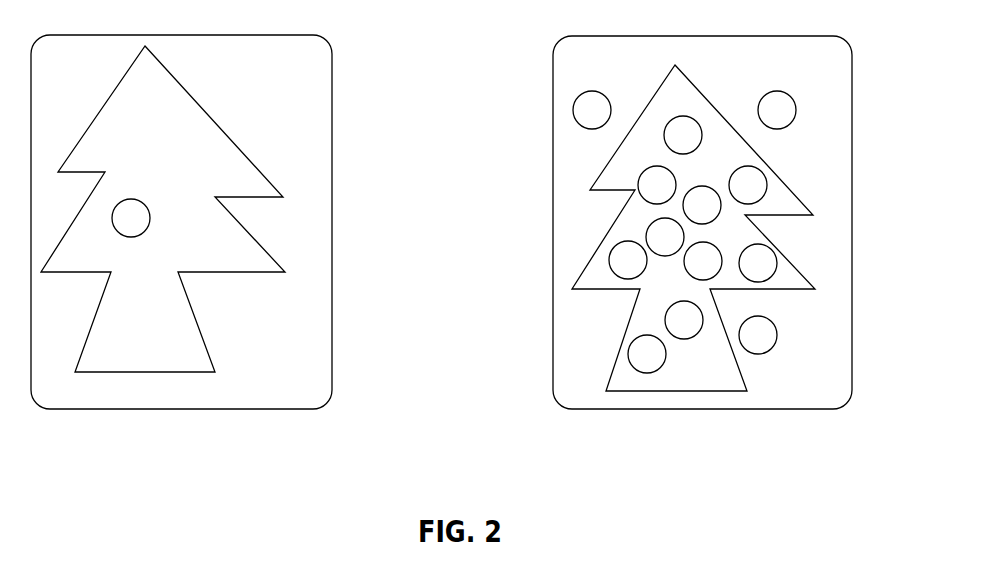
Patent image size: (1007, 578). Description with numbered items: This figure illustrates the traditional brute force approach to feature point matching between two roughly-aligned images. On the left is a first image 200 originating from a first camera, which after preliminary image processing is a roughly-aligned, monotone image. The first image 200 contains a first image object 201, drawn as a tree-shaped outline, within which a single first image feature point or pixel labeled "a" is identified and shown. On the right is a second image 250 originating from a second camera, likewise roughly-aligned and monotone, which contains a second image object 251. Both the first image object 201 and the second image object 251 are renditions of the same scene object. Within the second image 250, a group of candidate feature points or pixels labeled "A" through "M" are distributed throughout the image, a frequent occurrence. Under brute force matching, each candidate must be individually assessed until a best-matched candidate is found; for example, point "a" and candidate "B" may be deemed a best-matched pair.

The first image 200 is at (224, 222).
The first image object 201 is at (272, 183).
The second image 250 is at (751, 222).
The second image object 251 is at (803, 202).